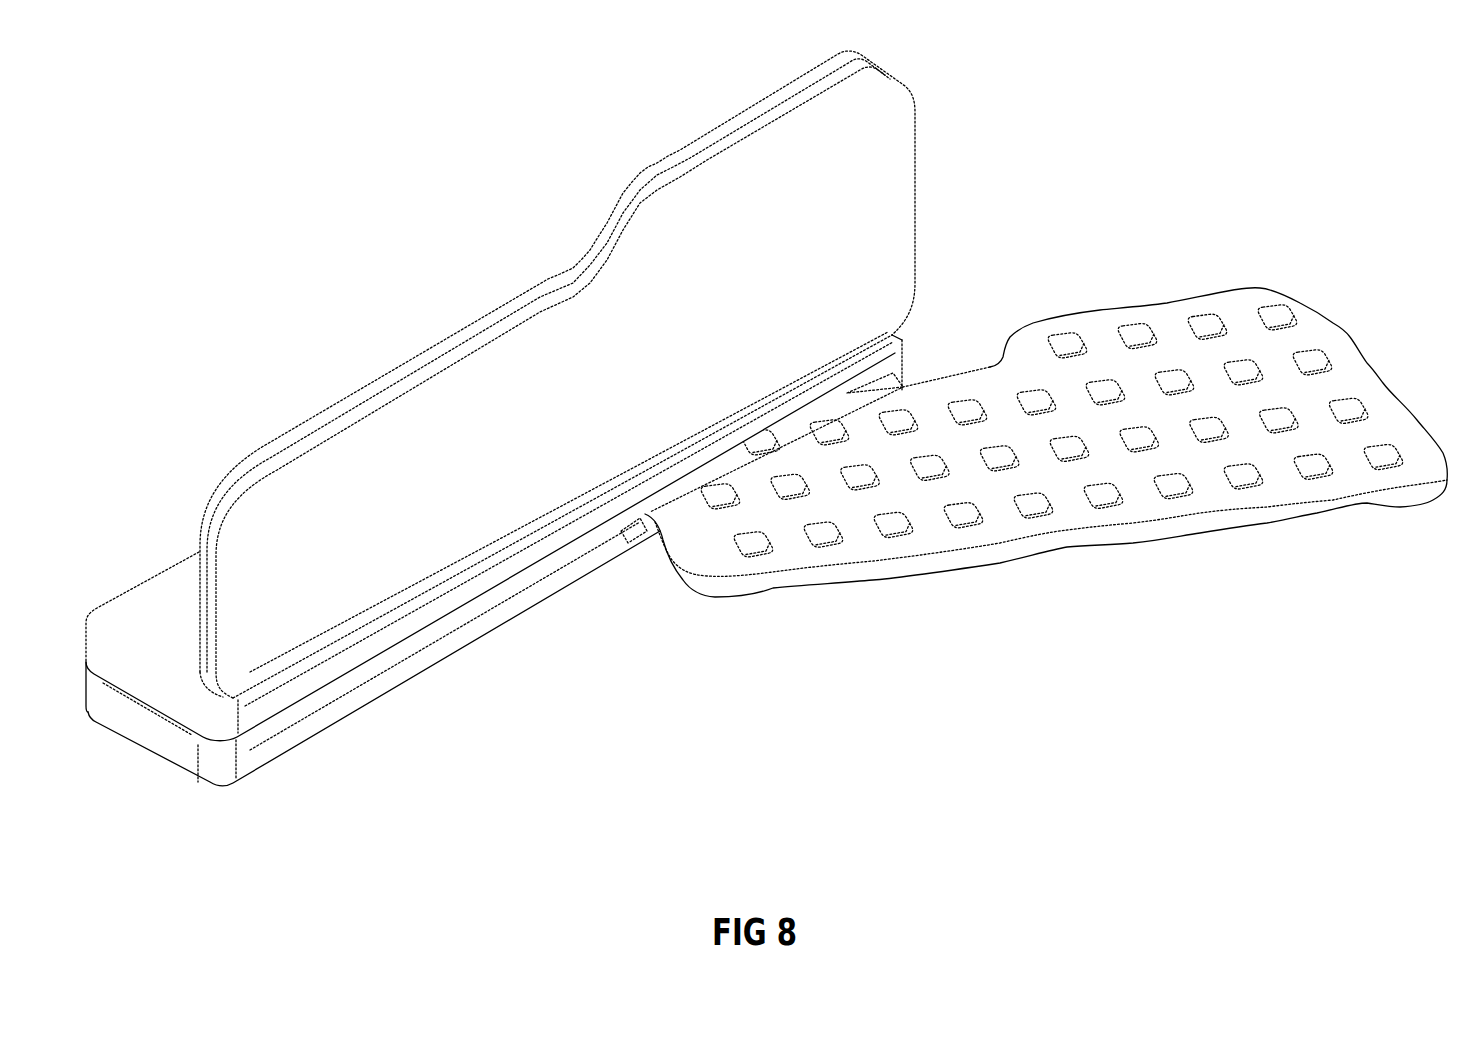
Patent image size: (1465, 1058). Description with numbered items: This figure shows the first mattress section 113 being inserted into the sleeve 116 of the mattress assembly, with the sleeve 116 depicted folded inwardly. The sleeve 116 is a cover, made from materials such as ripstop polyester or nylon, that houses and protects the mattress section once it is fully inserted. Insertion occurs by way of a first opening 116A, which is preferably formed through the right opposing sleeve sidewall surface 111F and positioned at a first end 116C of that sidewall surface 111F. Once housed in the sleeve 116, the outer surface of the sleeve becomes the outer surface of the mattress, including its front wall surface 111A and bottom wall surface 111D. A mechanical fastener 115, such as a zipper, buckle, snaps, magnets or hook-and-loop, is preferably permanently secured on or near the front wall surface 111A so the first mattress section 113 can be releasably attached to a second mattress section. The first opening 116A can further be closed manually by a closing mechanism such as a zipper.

The sleeve 116 is at (403, 273).
The front wall surface 111A is at (794, 282).
The right opposing sidewall surface 111F is at (688, 152).
The bottom wall surface 111D is at (157, 737).
The mechanical fastener 115 is at (893, 335).
The first end 116C is at (904, 358).
The first opening 116A is at (637, 522).
The first mattress section 113 is at (1082, 580).